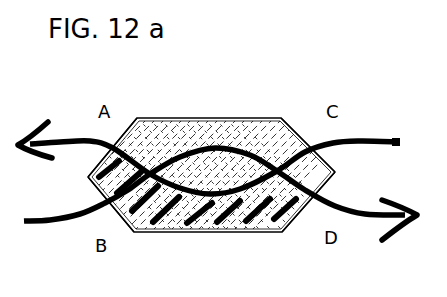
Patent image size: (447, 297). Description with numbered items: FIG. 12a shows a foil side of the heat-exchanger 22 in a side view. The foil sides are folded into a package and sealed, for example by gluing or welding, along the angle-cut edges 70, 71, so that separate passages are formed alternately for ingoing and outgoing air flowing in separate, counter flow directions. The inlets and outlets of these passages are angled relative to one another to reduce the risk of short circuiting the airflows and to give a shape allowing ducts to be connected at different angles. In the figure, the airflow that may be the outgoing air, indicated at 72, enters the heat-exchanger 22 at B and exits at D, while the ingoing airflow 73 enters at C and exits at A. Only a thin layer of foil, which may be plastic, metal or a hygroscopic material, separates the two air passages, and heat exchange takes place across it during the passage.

The heat-exchanger 22 is at (231, 111).
The angle-cut edge 70 is at (297, 136).
The angle-cut edge 71 is at (126, 134).
The first optical fiber end 72 is at (42, 224).
The ingoing airflow 73 is at (397, 138).